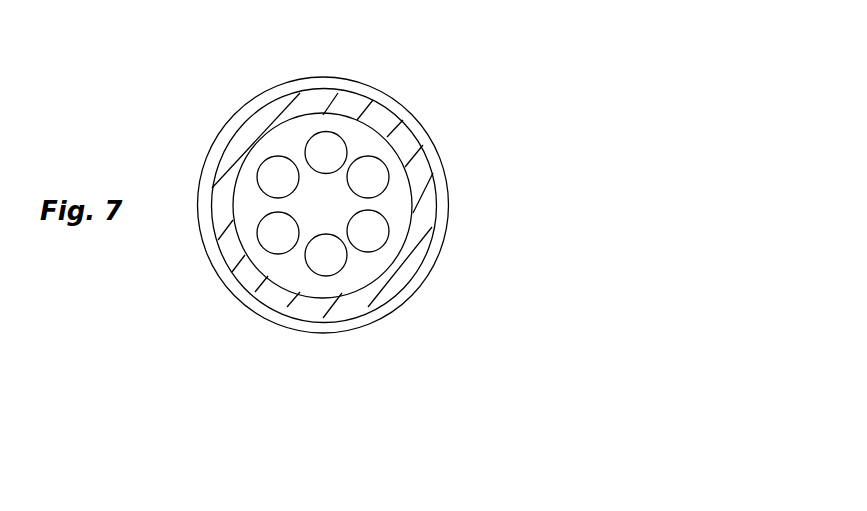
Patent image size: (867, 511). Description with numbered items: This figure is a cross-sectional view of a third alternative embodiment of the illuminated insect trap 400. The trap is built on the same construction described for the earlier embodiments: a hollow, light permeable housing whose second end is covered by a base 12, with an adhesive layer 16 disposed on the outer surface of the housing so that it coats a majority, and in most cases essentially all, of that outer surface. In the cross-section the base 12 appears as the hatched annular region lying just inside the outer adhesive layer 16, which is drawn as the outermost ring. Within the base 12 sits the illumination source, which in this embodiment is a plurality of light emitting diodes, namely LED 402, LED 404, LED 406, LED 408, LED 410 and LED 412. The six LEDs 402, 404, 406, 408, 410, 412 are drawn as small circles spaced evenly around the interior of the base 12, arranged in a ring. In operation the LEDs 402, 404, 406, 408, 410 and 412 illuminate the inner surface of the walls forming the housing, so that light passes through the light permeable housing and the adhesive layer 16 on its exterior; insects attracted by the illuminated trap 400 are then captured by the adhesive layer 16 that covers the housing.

The trap 400 is at (617, 147).
The adhesive layer 16 is at (420, 122).
The base 12 is at (423, 180).
The LED 402 is at (325, 148).
The LED 404 is at (370, 178).
The LED 406 is at (372, 238).
The LED 408 is at (327, 262).
The LED 410 is at (278, 233).
The LED 412 is at (275, 178).